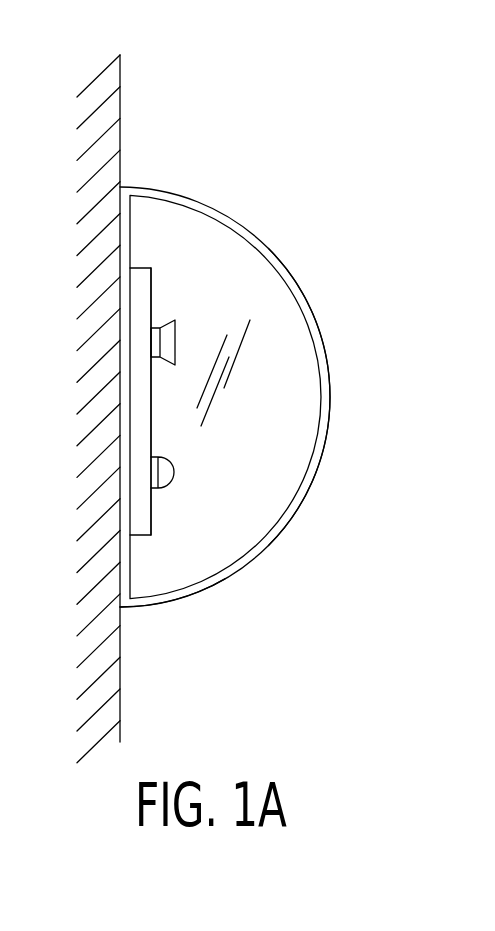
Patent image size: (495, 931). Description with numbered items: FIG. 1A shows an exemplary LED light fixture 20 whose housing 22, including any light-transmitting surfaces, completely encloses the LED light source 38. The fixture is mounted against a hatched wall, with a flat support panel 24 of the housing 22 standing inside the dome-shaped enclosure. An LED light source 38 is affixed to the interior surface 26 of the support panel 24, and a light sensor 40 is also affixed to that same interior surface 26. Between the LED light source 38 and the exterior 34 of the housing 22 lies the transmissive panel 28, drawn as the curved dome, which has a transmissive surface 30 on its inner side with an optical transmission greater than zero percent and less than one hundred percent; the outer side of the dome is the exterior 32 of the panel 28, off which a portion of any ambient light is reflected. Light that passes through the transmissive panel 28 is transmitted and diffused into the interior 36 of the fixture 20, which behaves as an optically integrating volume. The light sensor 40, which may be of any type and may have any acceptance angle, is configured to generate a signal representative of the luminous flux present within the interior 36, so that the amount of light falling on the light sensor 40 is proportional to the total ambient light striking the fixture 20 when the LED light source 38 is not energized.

The LED light fixture 20 is at (320, 229).
The housing 22 is at (217, 206).
The support panel 24 is at (156, 521).
The interior surface 26 is at (152, 498).
The transmissive panel 28 is at (252, 565).
The transmissive surface 30 is at (320, 396).
The exterior of the panel 32 is at (331, 392).
The exterior 34 is at (405, 316).
The interior 36 is at (232, 274).
The LED light source 38 is at (182, 468).
The light sensor 40 is at (181, 335).